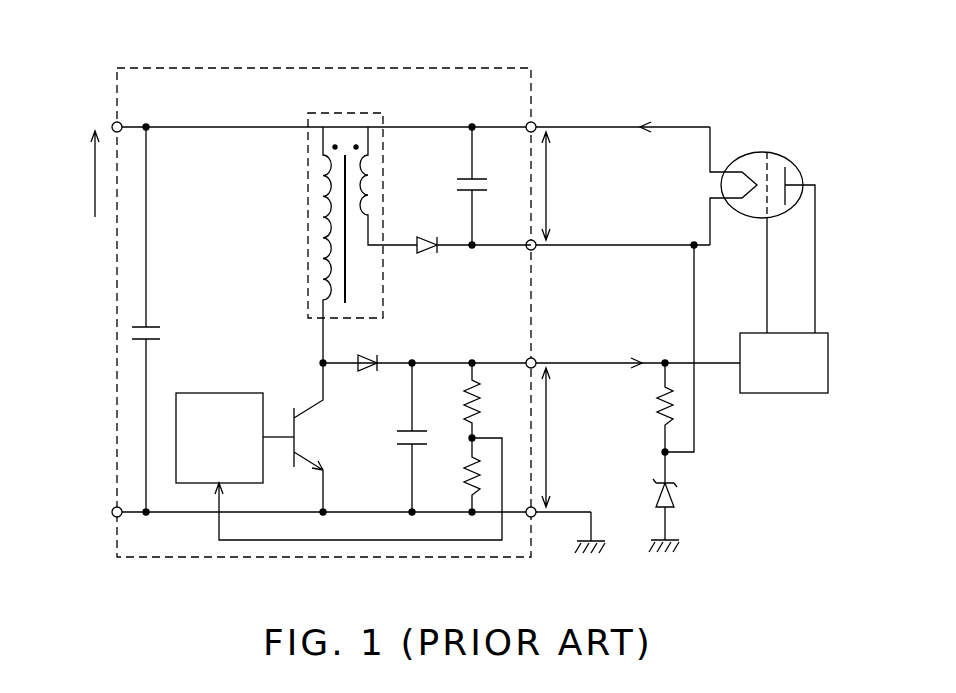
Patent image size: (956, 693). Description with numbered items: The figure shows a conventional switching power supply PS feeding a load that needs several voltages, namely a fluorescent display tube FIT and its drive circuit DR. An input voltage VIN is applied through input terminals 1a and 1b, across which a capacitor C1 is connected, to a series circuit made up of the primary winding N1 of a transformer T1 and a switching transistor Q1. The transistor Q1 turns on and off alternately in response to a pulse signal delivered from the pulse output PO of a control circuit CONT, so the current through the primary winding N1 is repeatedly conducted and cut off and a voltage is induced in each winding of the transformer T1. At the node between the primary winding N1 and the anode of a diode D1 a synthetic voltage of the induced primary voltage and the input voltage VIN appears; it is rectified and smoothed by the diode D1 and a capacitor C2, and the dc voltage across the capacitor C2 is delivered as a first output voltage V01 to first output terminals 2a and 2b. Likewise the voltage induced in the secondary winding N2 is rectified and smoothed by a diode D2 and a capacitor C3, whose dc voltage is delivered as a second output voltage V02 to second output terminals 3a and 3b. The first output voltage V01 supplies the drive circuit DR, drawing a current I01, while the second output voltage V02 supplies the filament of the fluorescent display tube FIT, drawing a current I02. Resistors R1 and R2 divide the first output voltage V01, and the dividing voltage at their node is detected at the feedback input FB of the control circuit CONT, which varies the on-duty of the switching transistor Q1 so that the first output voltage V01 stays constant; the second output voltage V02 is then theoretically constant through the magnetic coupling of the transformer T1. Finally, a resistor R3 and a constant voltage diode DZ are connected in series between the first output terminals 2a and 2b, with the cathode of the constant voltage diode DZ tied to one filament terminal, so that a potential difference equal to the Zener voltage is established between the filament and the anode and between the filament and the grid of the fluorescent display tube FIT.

The switching power supply PS is at (510, 68).
The input terminal 1a is at (113, 125).
The input terminal 1b is at (113, 510).
The first output terminal 2a is at (535, 359).
The first output terminal 2b is at (535, 516).
The second output terminal 3a is at (535, 123).
The second output terminal 3b is at (535, 249).
The input voltage VIN is at (74, 174).
The first output voltage V01 is at (569, 437).
The second output voltage V02 is at (568, 186).
The current flowing into the drive circuit I01 is at (643, 346).
The current flowing into the filament I02 is at (641, 110).
The capacitor C1 is at (160, 319).
The capacitor C2 is at (401, 437).
The capacitor C3 is at (486, 186).
The transformer T1 is at (342, 221).
The primary winding N1 is at (296, 245).
The secondary winding N2 is at (391, 186).
The diode D1 is at (371, 384).
The diode D2 is at (473, 266).
The resistor R1 is at (452, 400).
The resistor R2 is at (453, 475).
The resistor R3 is at (646, 407).
The constant voltage diode DZ is at (682, 502).
The switching transistor Q1 is at (327, 437).
The control circuit CONT is at (219, 413).
The pulse output PO is at (233, 426).
The feedback input FB is at (214, 469).
The fluorescent display tube FIT is at (762, 227).
The drive circuit DR is at (784, 381).